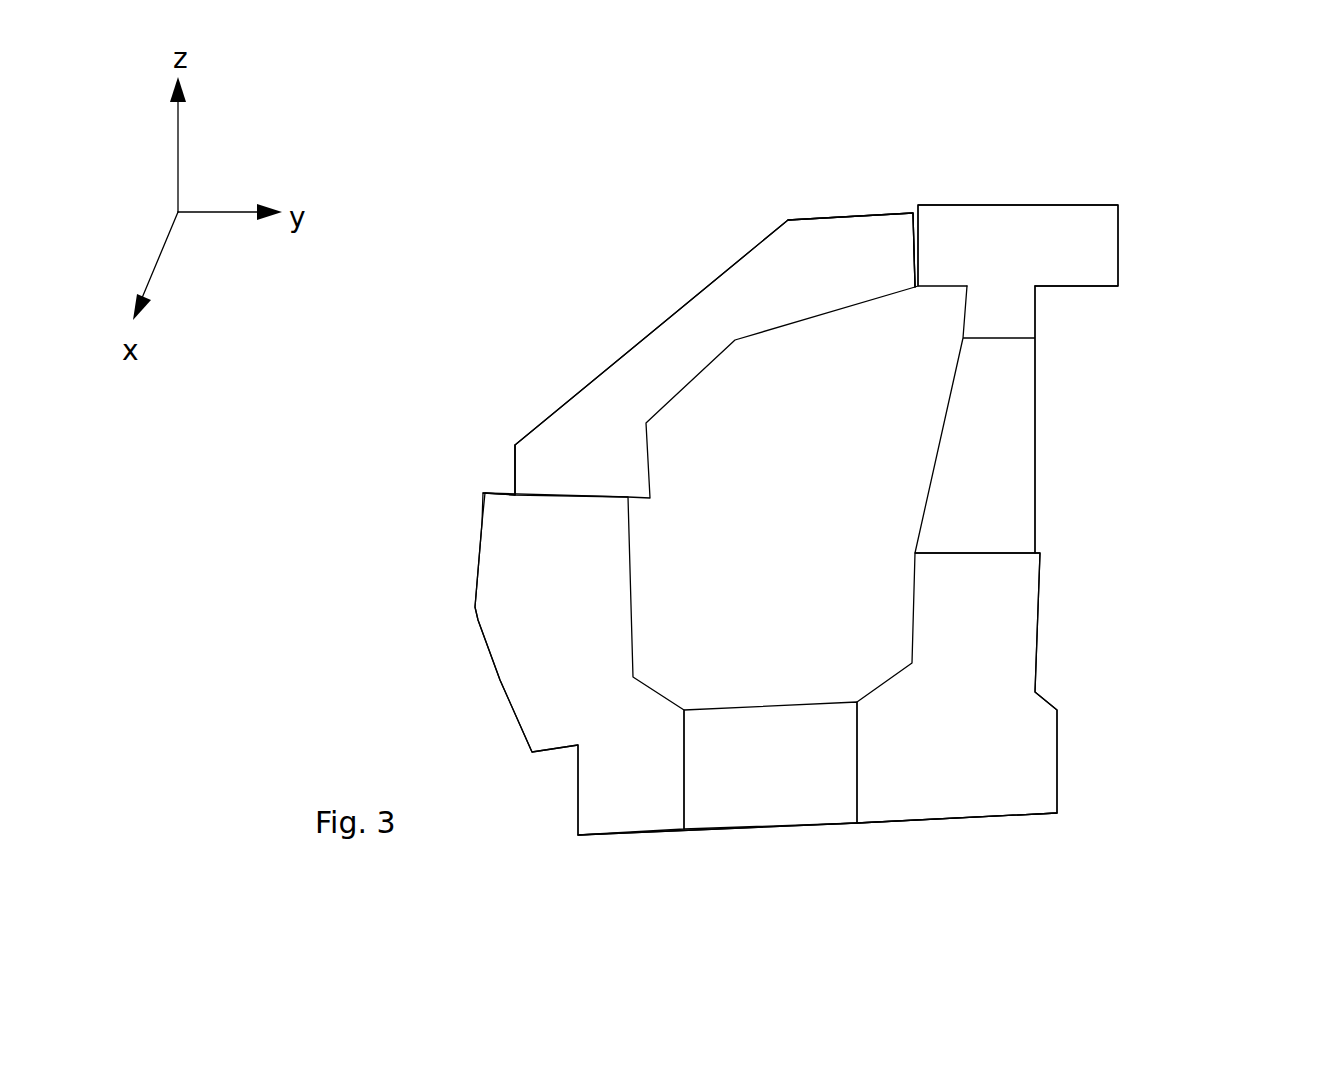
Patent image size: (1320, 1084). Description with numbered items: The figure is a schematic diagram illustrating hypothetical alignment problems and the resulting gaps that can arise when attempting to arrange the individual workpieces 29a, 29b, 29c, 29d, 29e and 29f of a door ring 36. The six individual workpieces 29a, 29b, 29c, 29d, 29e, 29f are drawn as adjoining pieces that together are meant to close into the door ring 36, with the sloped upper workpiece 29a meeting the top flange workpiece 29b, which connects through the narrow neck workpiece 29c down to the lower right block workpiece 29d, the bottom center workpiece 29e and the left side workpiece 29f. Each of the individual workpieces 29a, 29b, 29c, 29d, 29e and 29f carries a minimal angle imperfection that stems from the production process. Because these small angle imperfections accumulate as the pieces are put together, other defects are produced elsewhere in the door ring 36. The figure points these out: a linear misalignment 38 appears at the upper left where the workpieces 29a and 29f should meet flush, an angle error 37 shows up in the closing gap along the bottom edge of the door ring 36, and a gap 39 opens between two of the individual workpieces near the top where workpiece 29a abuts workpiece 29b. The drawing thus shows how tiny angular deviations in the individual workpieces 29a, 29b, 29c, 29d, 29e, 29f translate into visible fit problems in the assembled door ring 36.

The door ring 36 is at (582, 278).
The angle error 37 is at (870, 825).
The linear misalignment 38 is at (507, 493).
The gap 39 is at (912, 207).
The individual workpiece 29a is at (797, 273).
The individual workpiece 29b is at (1045, 250).
The individual workpiece 29c is at (1003, 460).
The individual workpiece 29d is at (990, 635).
The individual workpiece 29e is at (773, 785).
The individual workpiece 29f is at (573, 642).